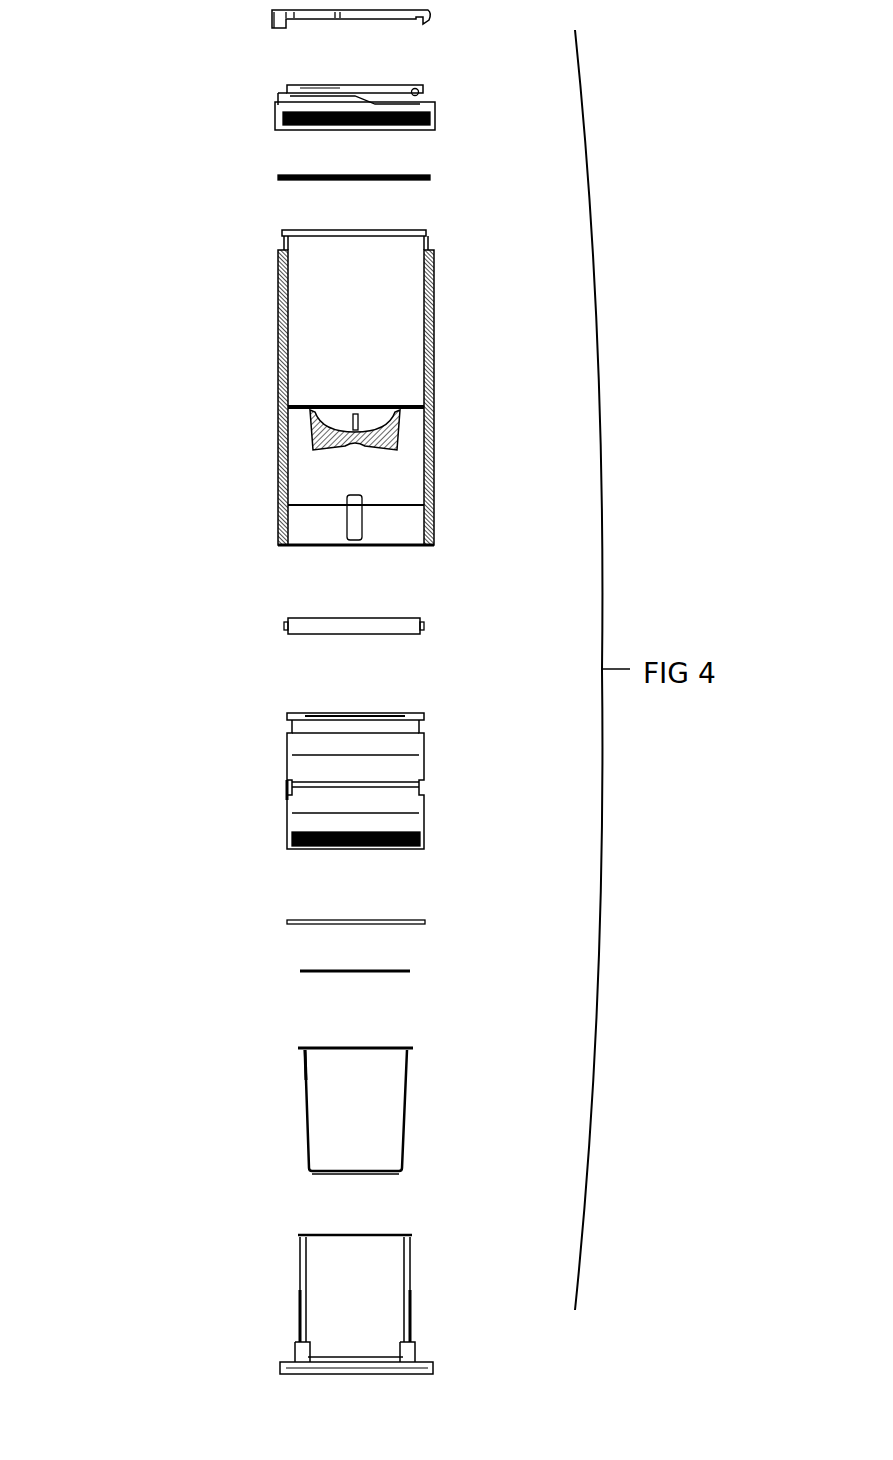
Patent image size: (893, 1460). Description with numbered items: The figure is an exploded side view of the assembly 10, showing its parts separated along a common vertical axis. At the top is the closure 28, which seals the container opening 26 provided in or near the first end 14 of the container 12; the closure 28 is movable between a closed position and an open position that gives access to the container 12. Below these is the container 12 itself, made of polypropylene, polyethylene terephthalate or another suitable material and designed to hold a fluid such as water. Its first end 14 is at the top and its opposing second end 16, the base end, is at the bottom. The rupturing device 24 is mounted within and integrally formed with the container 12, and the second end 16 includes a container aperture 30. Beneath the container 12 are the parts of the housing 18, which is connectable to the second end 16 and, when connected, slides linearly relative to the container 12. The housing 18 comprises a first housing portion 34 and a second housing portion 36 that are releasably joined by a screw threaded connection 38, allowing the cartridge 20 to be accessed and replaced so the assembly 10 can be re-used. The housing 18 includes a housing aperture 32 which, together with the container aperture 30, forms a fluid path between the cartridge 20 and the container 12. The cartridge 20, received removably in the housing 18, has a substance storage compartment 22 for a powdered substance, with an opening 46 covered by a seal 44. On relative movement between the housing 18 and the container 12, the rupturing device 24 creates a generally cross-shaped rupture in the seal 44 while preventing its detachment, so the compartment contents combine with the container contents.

The assembly 10 is at (147, 262).
The container 12 is at (352, 373).
The first end 14 is at (430, 238).
The second end 16 is at (425, 410).
The housing 18 is at (354, 1009).
The cartridge 20 is at (355, 1085).
The substance storage compartment 22 is at (388, 1105).
The rupturing device 24 is at (312, 438).
The container opening 26 is at (312, 90).
The closure 28 is at (385, 18).
The container aperture 30 is at (362, 405).
The housing aperture 32 is at (337, 716).
The first housing portion 34 is at (300, 1298).
The second housing portion 36 is at (288, 790).
The screw threaded connection 38 is at (395, 843).
The seal 44 is at (380, 1047).
The opening 46 is at (318, 1052).